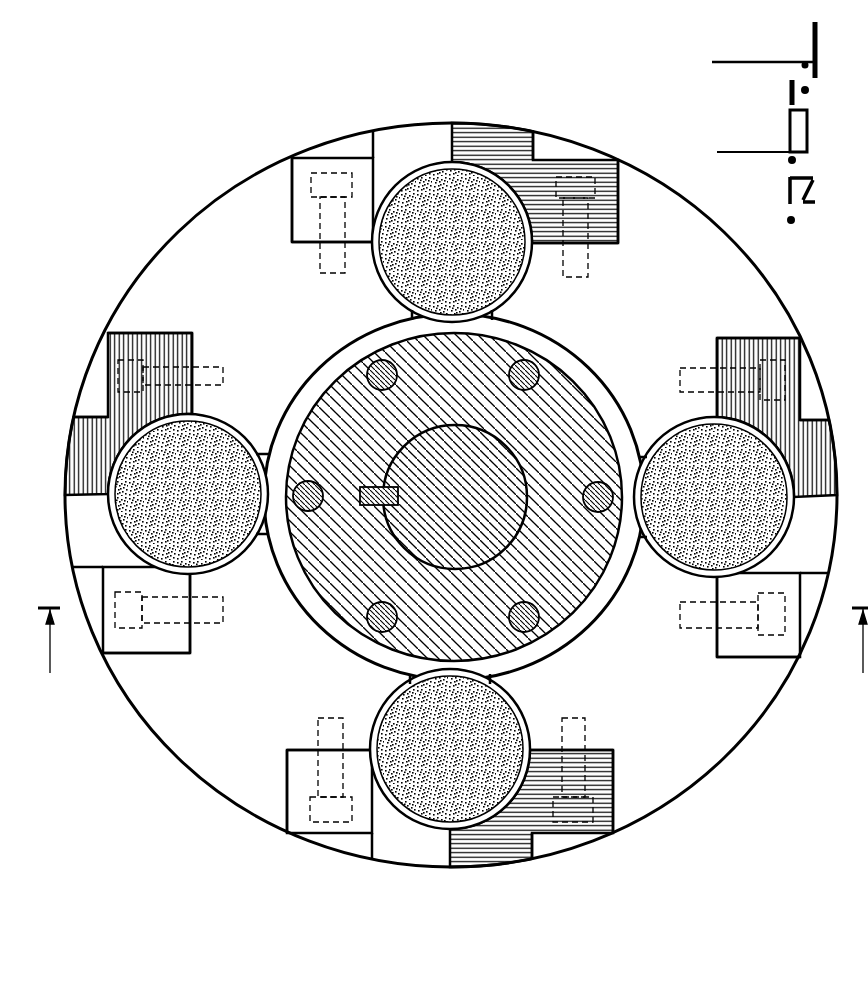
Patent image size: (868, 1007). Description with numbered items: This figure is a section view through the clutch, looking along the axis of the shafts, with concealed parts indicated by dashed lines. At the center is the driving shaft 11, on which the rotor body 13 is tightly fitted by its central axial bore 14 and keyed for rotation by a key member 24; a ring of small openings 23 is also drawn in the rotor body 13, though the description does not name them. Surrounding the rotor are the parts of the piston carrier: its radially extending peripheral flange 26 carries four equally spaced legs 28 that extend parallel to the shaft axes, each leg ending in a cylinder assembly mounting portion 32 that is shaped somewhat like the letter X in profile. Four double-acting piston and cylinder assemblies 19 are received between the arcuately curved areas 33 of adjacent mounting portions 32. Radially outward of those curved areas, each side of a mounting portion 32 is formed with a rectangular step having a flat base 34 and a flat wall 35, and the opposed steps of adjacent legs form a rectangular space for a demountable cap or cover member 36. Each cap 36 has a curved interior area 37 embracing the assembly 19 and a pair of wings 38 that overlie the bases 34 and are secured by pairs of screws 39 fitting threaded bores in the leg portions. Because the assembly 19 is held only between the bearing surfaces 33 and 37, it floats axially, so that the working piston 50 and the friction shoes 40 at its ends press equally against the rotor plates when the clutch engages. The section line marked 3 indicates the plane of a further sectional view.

The section line 3 is at (450, 651).
The driving shaft 11 is at (455, 497).
The rotor body 13 is at (454, 497).
The central axial bore 14 is at (454, 497).
The piston and cylinder assemblies 19 is at (472, 500).
The bolt holes 23 is at (459, 492).
The key member 24 is at (370, 474).
The peripheral flange 26 is at (441, 500).
The legs 28 is at (451, 498).
The cylinder assembly mounting portion 32 is at (451, 498).
The arcuately curved areas 33 is at (456, 497).
The flat base 34 is at (453, 496).
The flat wall 35 is at (451, 495).
The cap or cover members 36 is at (444, 500).
The curved interior area 37 is at (445, 500).
The wings 38 is at (450, 512).
The screws 39 is at (439, 508).
The friction shoes 40 is at (472, 500).
The working piston 50 is at (454, 500).